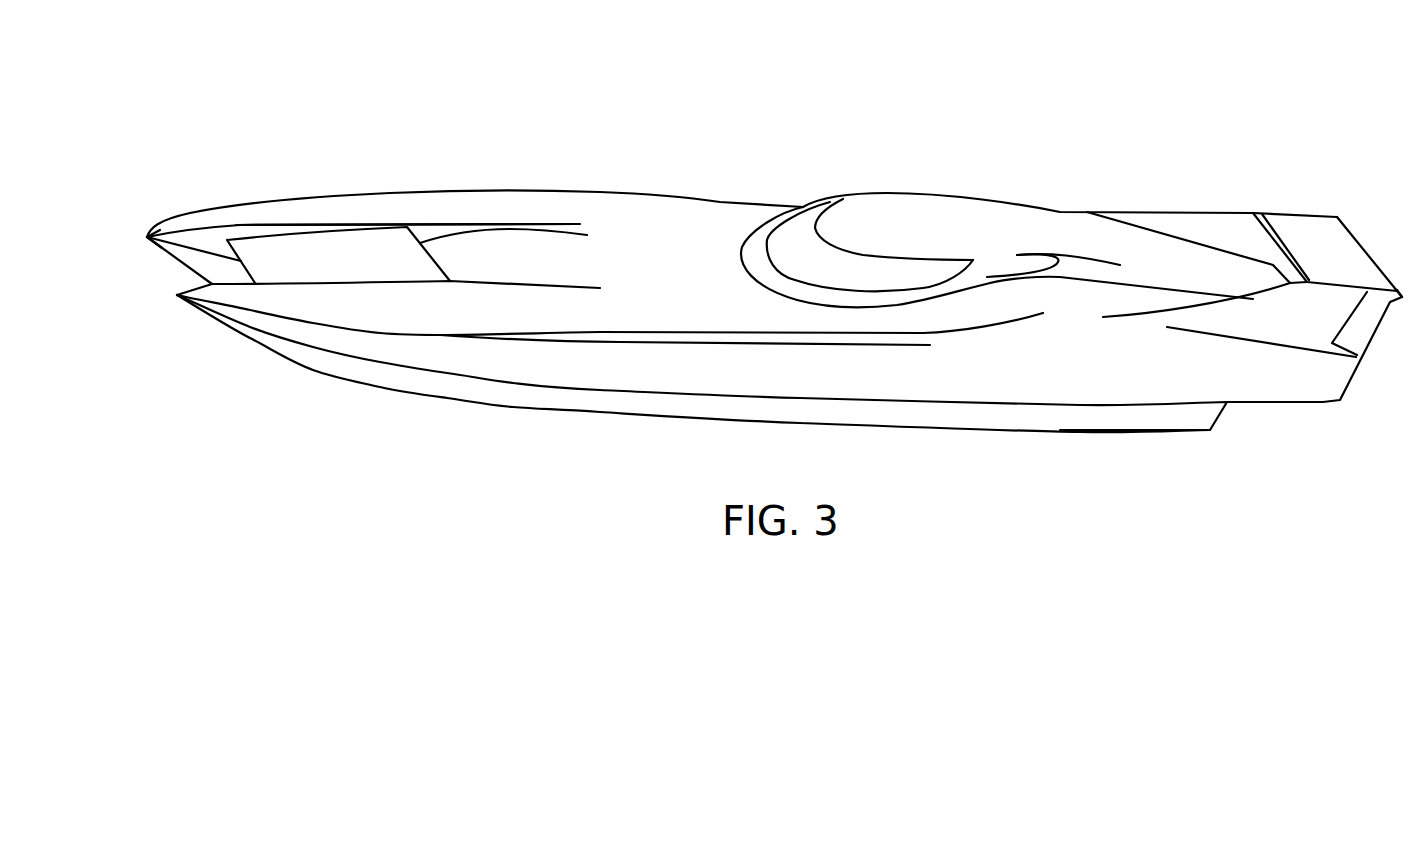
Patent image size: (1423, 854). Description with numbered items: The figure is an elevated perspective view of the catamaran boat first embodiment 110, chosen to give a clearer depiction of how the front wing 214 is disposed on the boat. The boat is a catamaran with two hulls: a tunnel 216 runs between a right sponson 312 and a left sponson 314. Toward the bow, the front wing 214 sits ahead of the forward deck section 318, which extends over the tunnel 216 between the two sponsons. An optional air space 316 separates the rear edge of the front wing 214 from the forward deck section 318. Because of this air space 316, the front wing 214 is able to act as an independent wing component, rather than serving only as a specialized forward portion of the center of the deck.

The catamaran boat first embodiment 110 is at (715, 116).
The front wing 214 is at (316, 253).
The tunnel 216 is at (157, 268).
The right sponson 312 is at (191, 217).
The left sponson 314 is at (217, 302).
The air space 316 is at (423, 226).
The forward deck section 318 is at (522, 243).